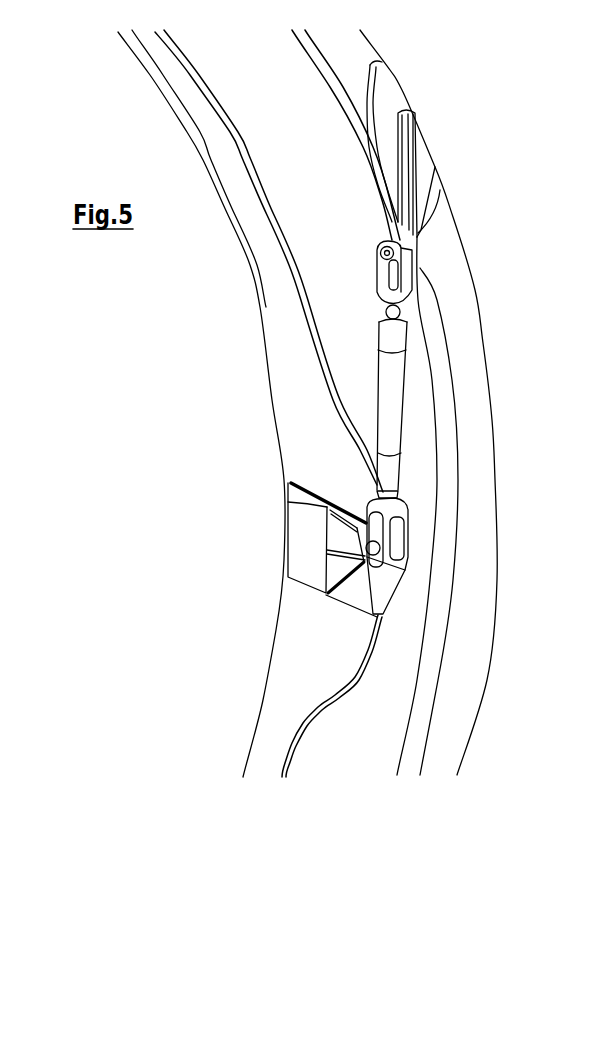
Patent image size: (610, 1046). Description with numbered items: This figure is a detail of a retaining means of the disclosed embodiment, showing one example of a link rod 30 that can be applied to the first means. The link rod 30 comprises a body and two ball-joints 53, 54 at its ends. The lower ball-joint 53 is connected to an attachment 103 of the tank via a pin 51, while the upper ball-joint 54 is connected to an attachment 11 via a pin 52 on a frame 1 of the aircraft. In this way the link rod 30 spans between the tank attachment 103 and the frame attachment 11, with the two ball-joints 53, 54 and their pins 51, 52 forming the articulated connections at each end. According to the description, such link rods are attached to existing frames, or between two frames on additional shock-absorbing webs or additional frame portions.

The frame 1 is at (458, 288).
The attachment 11 is at (425, 183).
The link rod 30 is at (403, 400).
The pin 51 is at (287, 502).
The pin 52 is at (430, 307).
The ball-joint 53 is at (411, 536).
The ball-joint 54 is at (409, 272).
The attachment of the tank 103 is at (287, 557).